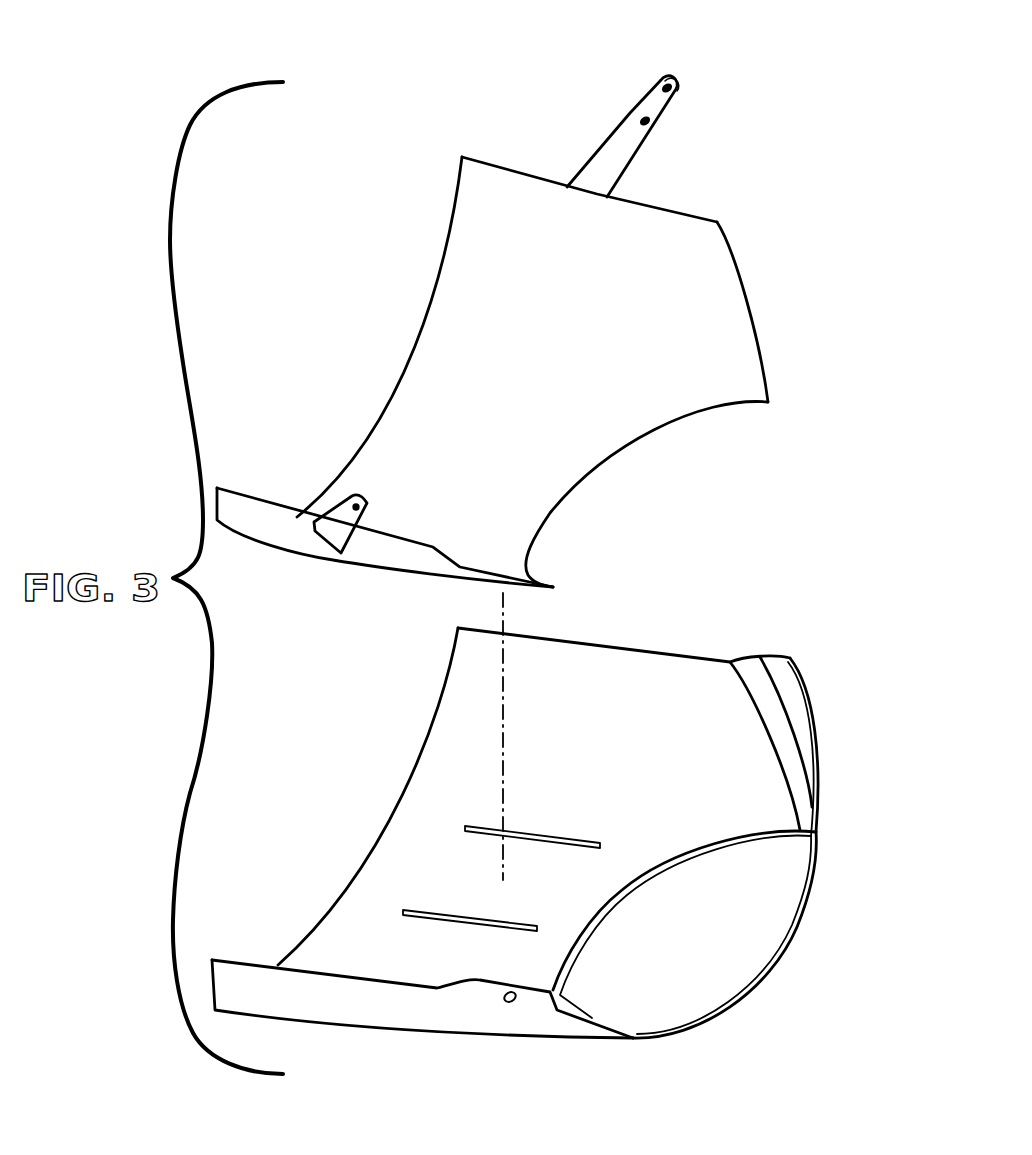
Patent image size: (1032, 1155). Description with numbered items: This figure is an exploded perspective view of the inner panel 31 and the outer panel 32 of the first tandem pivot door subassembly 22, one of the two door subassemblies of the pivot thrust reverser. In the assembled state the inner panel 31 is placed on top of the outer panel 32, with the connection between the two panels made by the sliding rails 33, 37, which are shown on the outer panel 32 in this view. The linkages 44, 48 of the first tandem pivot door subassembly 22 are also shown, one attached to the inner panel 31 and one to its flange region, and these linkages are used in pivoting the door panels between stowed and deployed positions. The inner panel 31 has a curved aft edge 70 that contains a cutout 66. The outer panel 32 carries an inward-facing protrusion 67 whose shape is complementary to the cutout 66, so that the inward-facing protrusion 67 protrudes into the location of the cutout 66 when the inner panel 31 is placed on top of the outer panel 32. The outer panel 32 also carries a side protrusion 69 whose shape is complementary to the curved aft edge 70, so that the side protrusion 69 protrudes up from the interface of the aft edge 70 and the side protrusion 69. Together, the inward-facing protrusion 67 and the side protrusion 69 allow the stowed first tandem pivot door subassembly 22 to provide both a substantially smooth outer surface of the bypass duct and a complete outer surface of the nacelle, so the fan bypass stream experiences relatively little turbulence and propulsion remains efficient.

The first tandem pivot door subassembly 22 is at (391, 103).
The inner panel 31 is at (437, 385).
The outer panel 32 is at (363, 962).
The first sliding rail 33 is at (480, 828).
The sliding rail 37 is at (423, 910).
The linkage 44 is at (330, 531).
The linkage 48 is at (620, 150).
The cutout 66 is at (583, 473).
The inward-facing protrusion 67 is at (693, 950).
The side protrusion 69 is at (786, 714).
The aft edge 70 is at (755, 318).